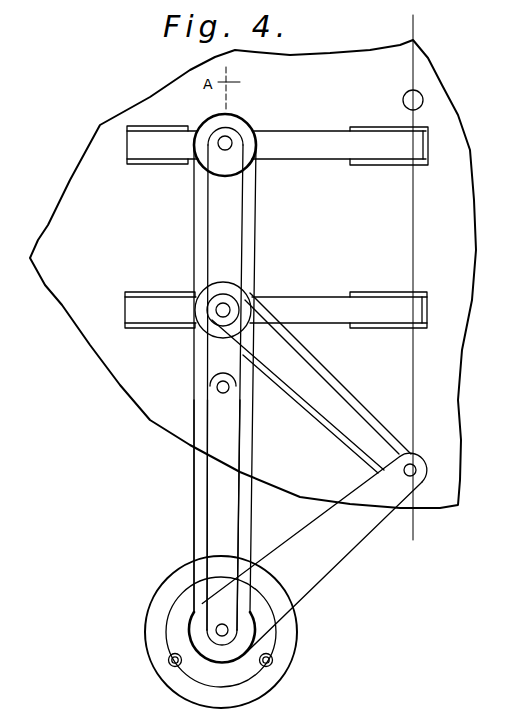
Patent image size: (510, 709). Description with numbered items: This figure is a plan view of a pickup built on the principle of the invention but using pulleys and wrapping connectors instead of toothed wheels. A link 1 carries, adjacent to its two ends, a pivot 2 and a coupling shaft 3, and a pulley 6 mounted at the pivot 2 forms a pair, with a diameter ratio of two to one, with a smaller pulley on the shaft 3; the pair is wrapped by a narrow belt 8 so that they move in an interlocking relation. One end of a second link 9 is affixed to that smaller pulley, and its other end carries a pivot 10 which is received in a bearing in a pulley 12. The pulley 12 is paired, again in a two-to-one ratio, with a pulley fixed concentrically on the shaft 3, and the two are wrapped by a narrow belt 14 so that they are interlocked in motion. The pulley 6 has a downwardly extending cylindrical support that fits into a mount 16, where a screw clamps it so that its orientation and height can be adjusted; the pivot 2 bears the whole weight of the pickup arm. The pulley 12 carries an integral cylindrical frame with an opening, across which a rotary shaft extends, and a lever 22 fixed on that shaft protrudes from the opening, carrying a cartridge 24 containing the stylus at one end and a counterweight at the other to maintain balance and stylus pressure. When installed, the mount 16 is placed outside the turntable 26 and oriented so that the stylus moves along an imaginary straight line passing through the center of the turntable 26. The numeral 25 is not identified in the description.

The link 1 is at (216, 469).
The pivot 2 is at (223, 638).
The coupling shaft 3 is at (216, 388).
The pulley 6 is at (217, 653).
The narrow belt 8 is at (197, 523).
The link 9 is at (222, 245).
The pivot 10 is at (226, 151).
The pulley 12 is at (246, 128).
The narrow belt 14 is at (196, 213).
The mount 16 is at (160, 598).
The lever 22 is at (318, 160).
The cartridge 24 is at (390, 162).
The clamp piece 25 is at (153, 130).
The turntable 26 is at (108, 352).